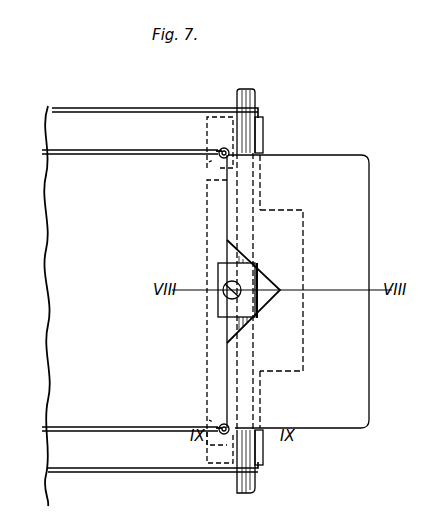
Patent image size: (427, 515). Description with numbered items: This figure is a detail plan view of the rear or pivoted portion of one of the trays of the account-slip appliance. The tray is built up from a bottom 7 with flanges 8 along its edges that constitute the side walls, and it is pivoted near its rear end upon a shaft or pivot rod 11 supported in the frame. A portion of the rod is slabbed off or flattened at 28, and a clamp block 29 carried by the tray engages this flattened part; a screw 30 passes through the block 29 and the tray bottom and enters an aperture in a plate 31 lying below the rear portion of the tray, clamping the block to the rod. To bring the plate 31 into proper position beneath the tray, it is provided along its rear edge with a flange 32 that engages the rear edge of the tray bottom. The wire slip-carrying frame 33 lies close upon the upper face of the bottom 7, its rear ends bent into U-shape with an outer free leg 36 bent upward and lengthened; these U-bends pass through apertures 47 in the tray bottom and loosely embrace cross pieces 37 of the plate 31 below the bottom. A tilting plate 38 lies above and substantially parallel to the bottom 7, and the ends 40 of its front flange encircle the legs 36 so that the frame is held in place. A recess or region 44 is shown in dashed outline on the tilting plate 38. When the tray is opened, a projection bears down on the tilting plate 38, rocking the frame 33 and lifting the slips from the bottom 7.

The bottom 7 is at (52, 243).
The flanges 8 is at (120, 104).
The shaft or pivot rod 11 is at (256, 96).
The flattened portion 28 is at (228, 260).
The clamp block 29 is at (218, 274).
The screw 30 is at (226, 294).
The plate 31 is at (207, 211).
The flange 32 is at (265, 143).
The slip-carrying frame 33 is at (106, 145).
The free leg 36 is at (207, 294).
The cross pieces 37 is at (210, 181).
The tilting plate 38 is at (362, 242).
The sleeves or bent portions 40 is at (220, 152).
The recess 44 is at (305, 229).
The apertures 47 is at (216, 159).